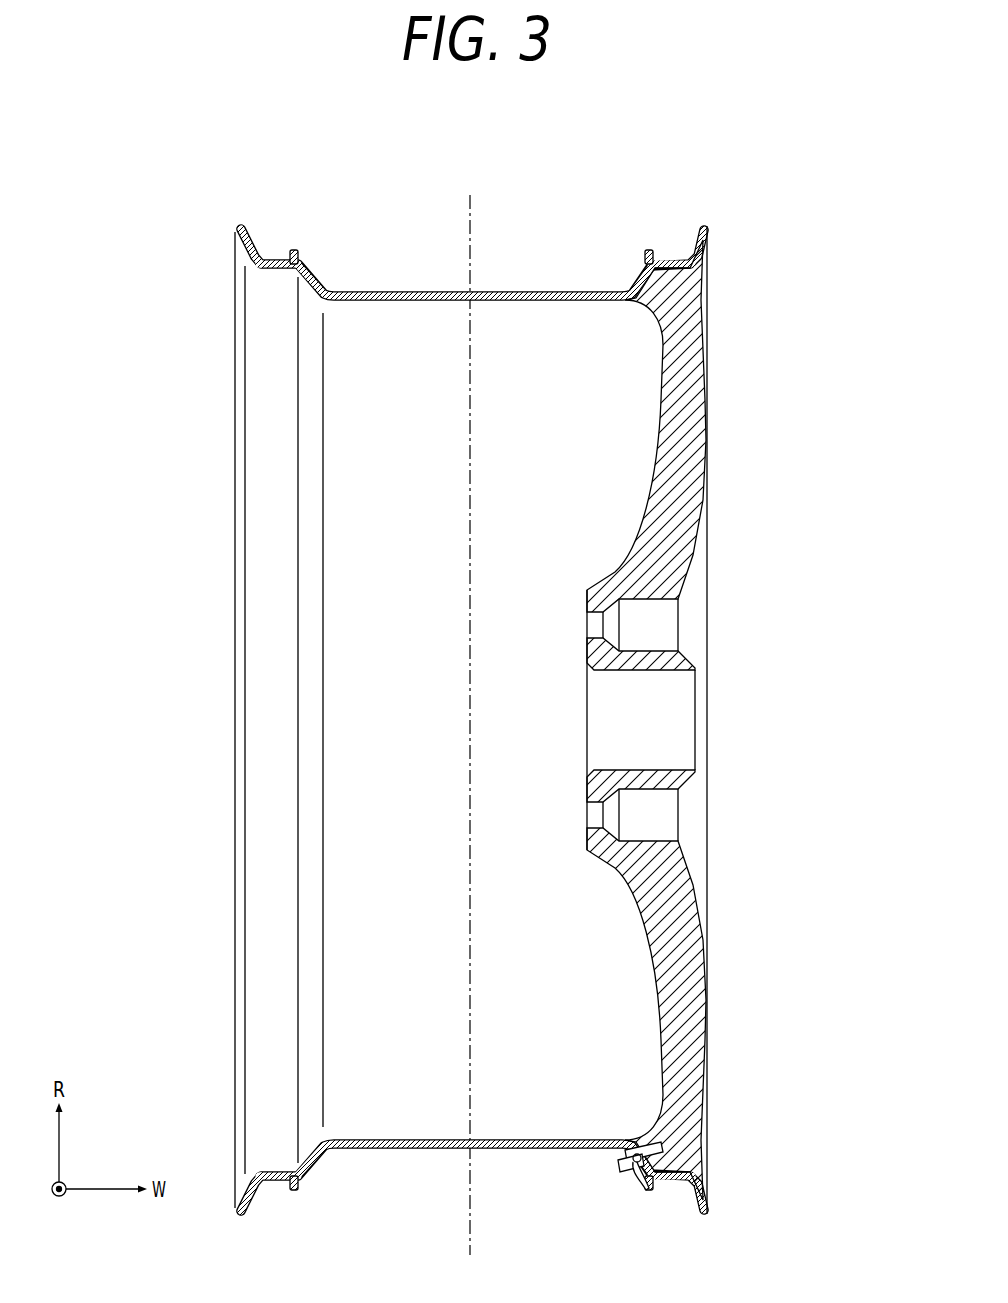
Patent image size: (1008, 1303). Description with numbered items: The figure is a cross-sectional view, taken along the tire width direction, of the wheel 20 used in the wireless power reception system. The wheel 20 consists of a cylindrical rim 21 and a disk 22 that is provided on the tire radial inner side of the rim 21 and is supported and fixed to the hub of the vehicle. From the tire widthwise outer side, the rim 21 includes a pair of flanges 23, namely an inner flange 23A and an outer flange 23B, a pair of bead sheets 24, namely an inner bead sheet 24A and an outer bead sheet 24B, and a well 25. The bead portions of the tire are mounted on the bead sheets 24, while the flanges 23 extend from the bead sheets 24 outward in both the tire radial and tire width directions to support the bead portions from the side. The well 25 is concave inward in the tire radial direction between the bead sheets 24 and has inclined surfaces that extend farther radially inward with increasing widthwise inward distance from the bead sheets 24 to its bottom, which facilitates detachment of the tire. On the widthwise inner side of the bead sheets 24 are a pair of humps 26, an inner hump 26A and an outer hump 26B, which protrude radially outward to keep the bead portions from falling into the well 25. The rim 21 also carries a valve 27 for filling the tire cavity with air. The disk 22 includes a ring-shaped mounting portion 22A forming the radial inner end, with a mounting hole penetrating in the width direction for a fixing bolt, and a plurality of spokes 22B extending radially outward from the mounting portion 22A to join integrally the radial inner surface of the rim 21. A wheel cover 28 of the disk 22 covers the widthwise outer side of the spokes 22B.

The wheel 20 is at (387, 164).
The rim 21 is at (413, 289).
The disk 22 is at (751, 359).
The mounting portion 22A is at (673, 663).
The spokes 22B is at (687, 468).
The flanges 23 is at (237, 226).
The inner flange 23A is at (251, 720).
The outer flange 23B is at (697, 720).
The bead sheets 24 is at (278, 257).
The inner bead sheet 24A is at (278, 720).
The outer bead sheet 24B is at (671, 720).
The well 25 is at (522, 291).
The humps 26 is at (297, 254).
The inner hump 26A is at (294, 720).
The outer hump 26B is at (649, 720).
The valve 27 is at (632, 1166).
The wheel cover 28 is at (707, 283).